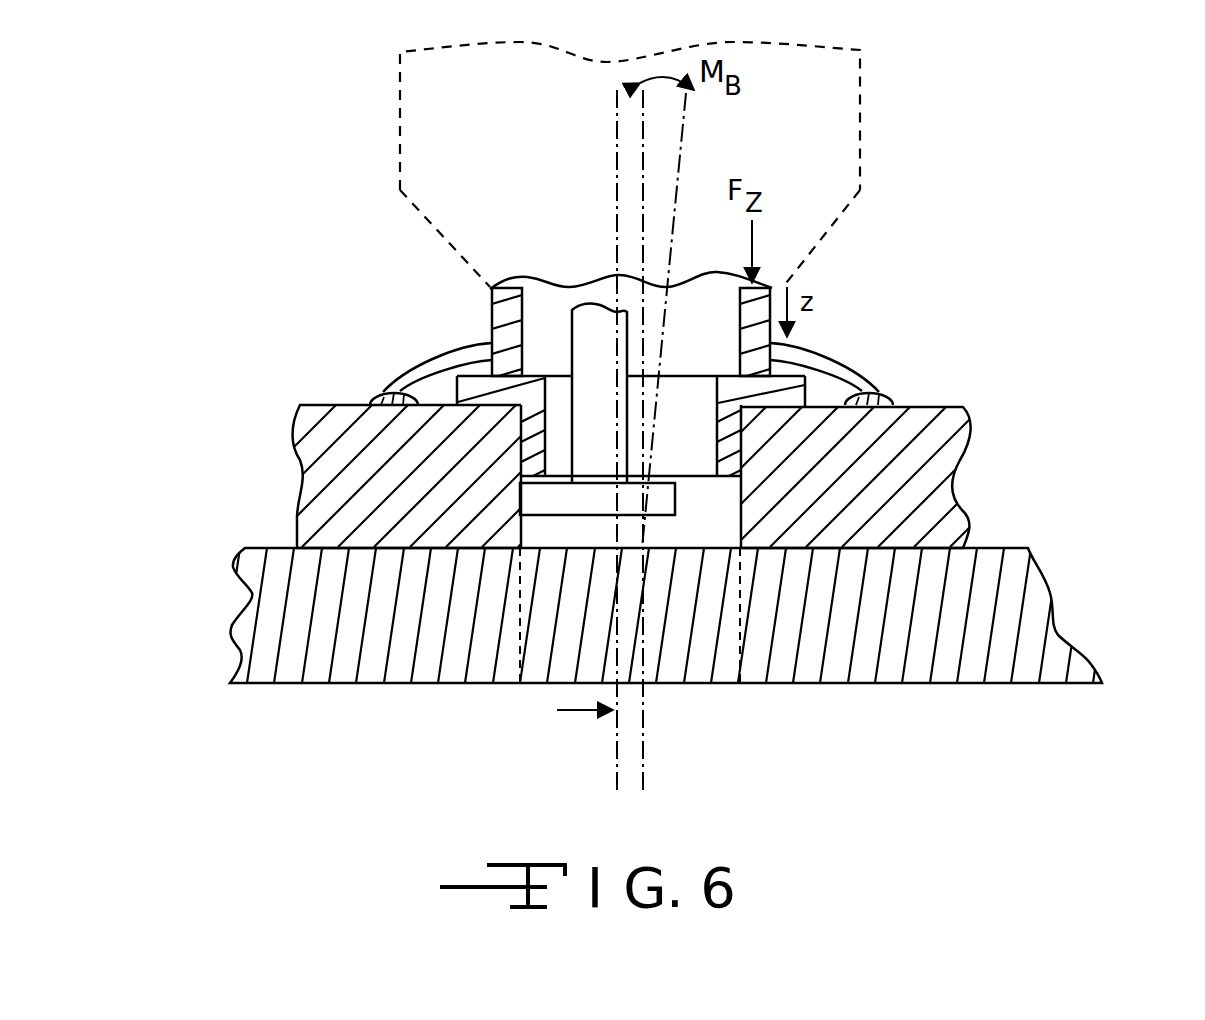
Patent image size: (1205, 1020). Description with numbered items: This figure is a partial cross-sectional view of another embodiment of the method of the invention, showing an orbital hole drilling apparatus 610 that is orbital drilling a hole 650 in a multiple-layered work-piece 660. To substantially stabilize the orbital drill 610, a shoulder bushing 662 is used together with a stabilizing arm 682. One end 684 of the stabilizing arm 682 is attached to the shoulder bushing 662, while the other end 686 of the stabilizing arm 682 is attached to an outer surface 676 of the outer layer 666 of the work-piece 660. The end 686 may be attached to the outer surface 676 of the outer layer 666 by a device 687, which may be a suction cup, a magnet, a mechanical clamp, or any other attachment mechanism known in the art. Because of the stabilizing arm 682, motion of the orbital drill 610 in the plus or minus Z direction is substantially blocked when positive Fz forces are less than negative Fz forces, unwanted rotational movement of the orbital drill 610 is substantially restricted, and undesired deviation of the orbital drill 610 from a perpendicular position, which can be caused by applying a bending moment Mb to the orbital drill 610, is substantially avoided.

The orbital hole drilling apparatus 610 is at (800, 186).
The hole 650 is at (688, 636).
The multiple-layered work-piece 660 is at (1085, 515).
The shoulder bushing 662 is at (783, 376).
The outer layer 666 is at (340, 438).
The outer surface 676 is at (957, 406).
The stabilizing arm 682 is at (422, 354).
The one end 684 is at (776, 348).
The other end 686 is at (877, 392).
The device 687 is at (890, 393).